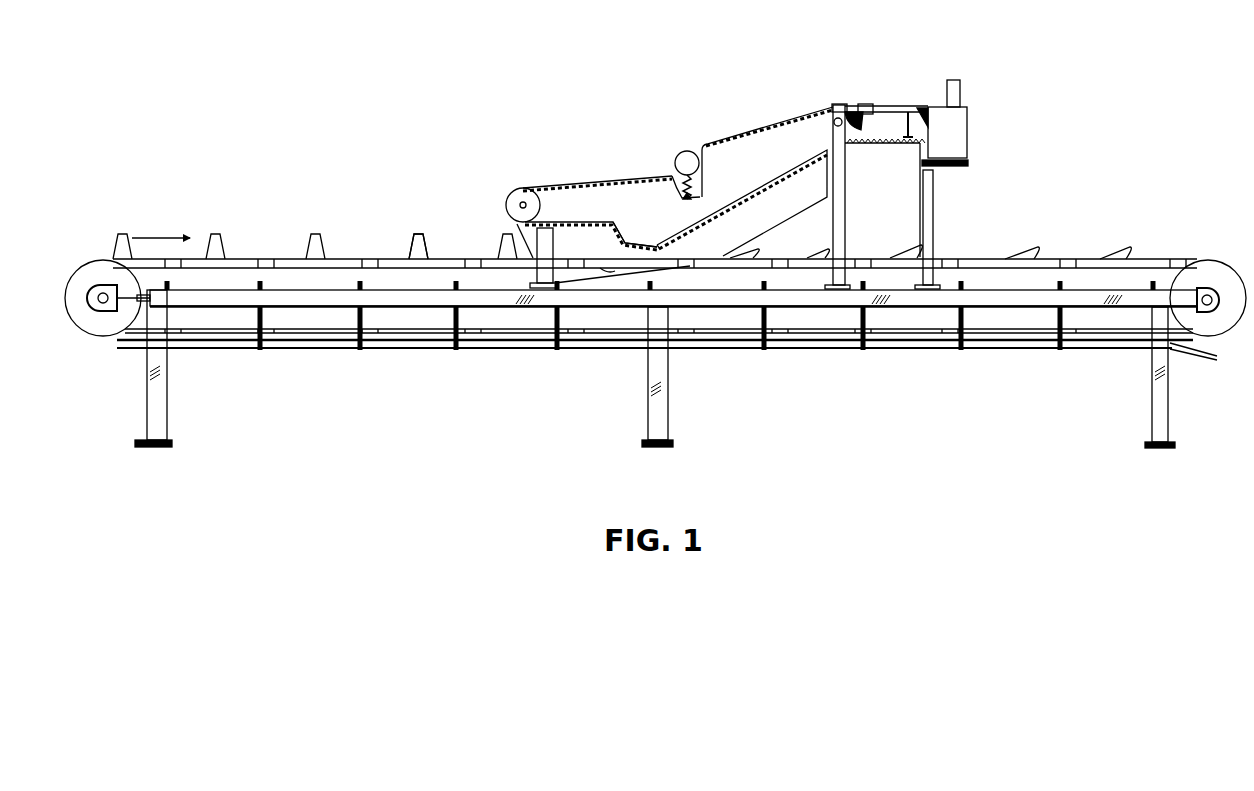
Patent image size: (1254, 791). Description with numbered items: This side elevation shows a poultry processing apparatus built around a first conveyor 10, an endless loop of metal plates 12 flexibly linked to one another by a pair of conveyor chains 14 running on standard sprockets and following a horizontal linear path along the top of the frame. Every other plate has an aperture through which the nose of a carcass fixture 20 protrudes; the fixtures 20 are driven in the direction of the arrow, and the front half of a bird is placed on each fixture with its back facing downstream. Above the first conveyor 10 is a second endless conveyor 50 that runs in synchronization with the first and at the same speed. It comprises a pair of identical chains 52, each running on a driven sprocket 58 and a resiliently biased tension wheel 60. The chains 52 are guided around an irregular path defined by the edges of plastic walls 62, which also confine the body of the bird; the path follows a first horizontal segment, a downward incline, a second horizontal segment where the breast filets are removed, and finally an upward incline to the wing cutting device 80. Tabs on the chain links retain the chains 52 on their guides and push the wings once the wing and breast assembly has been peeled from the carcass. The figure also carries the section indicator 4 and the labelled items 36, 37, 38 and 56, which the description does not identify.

The section line 4- 4 is at (690, 255).
The first conveyor 10 is at (351, 247).
The metal plates 12 is at (273, 257).
The conveyor chains 14 is at (368, 258).
The carcass fixture 20 is at (427, 245).
The drive pulley 36 is at (88, 252).
The idler pulley 37 is at (1213, 257).
The support leg 38 is at (668, 413).
The second endless conveyor 50 is at (754, 126).
The chains 52 is at (573, 184).
The support column 56 is at (876, 105).
The driven sprocket 58 is at (517, 193).
The tension wheel 60 is at (677, 160).
The plastic walls 62 is at (658, 224).
The wing cutting device 80 is at (943, 63).